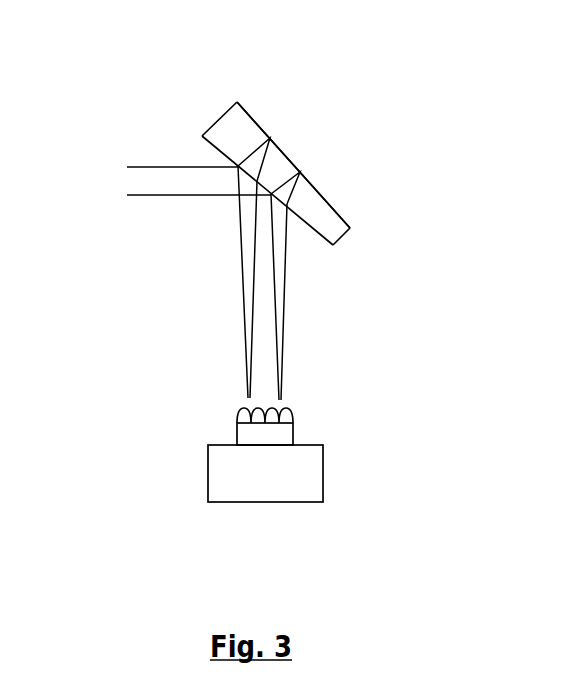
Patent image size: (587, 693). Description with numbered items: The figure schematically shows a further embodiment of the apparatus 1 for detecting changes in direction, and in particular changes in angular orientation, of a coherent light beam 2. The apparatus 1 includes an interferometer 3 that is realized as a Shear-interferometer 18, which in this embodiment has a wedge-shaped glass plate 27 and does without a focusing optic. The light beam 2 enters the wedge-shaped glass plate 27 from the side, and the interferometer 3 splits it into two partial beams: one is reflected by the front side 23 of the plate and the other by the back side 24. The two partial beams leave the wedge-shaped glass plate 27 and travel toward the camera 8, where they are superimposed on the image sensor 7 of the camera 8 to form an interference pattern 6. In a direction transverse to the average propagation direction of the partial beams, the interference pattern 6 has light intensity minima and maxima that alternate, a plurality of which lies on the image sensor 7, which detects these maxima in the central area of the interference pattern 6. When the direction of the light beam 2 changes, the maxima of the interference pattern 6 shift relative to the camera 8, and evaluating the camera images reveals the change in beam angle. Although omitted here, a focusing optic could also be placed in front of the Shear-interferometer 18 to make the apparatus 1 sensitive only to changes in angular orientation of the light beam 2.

The apparatus 1 is at (365, 88).
The light beam 2 is at (143, 180).
The interferometer 3 is at (327, 152).
The interference pattern 6 is at (240, 405).
The image sensor 7 is at (293, 434).
The camera 8 is at (323, 478).
The Shear-interferometer 18 is at (258, 108).
The front side 23 is at (201, 140).
The back side 24 is at (262, 128).
The wedge-shaped glass plate 27 is at (210, 107).